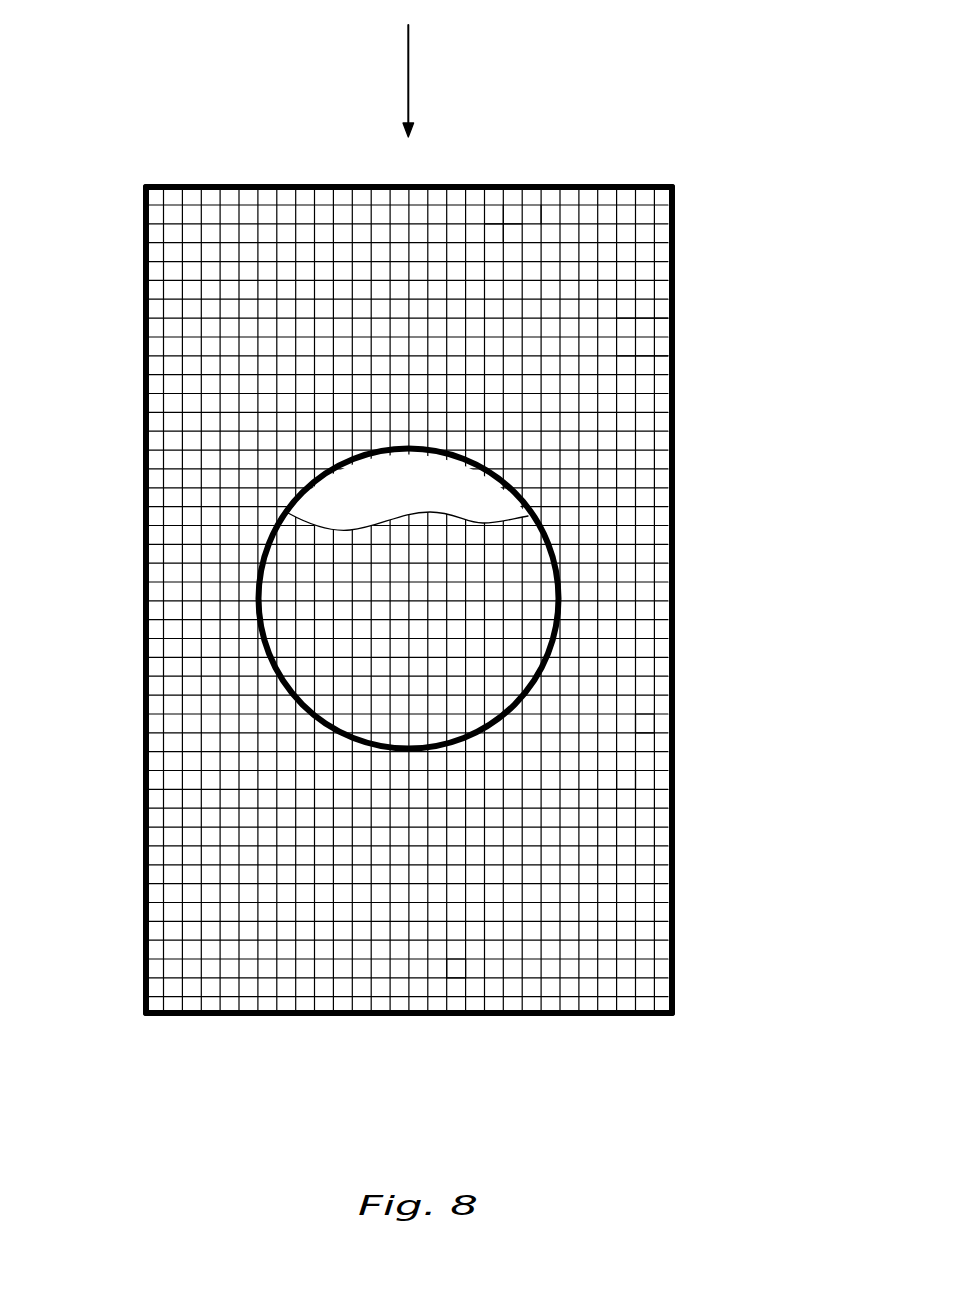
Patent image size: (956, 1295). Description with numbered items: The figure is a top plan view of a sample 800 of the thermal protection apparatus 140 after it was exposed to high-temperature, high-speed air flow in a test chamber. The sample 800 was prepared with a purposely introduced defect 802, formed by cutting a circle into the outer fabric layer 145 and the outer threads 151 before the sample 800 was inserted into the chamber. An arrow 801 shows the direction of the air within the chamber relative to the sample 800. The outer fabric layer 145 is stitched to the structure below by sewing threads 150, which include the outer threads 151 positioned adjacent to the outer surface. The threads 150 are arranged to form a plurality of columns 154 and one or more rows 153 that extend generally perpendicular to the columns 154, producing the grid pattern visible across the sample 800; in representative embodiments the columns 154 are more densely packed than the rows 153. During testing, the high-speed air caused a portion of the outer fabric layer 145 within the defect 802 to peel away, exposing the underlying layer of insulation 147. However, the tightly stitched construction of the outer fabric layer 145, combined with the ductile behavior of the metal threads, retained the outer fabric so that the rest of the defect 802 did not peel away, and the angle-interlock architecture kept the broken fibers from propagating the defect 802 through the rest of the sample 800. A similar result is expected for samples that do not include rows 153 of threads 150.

The sample 800 is at (678, 132).
The arrow 801 is at (408, 80).
The defect 802 is at (263, 573).
The thermal protection apparatus 140 is at (676, 965).
The outer fabric layer 145 is at (643, 590).
The layer of insulation 147 is at (402, 506).
The sewing threads 150 is at (635, 780).
The outer threads 151 is at (453, 975).
The rows 153 is at (638, 357).
The columns 154 is at (540, 213).